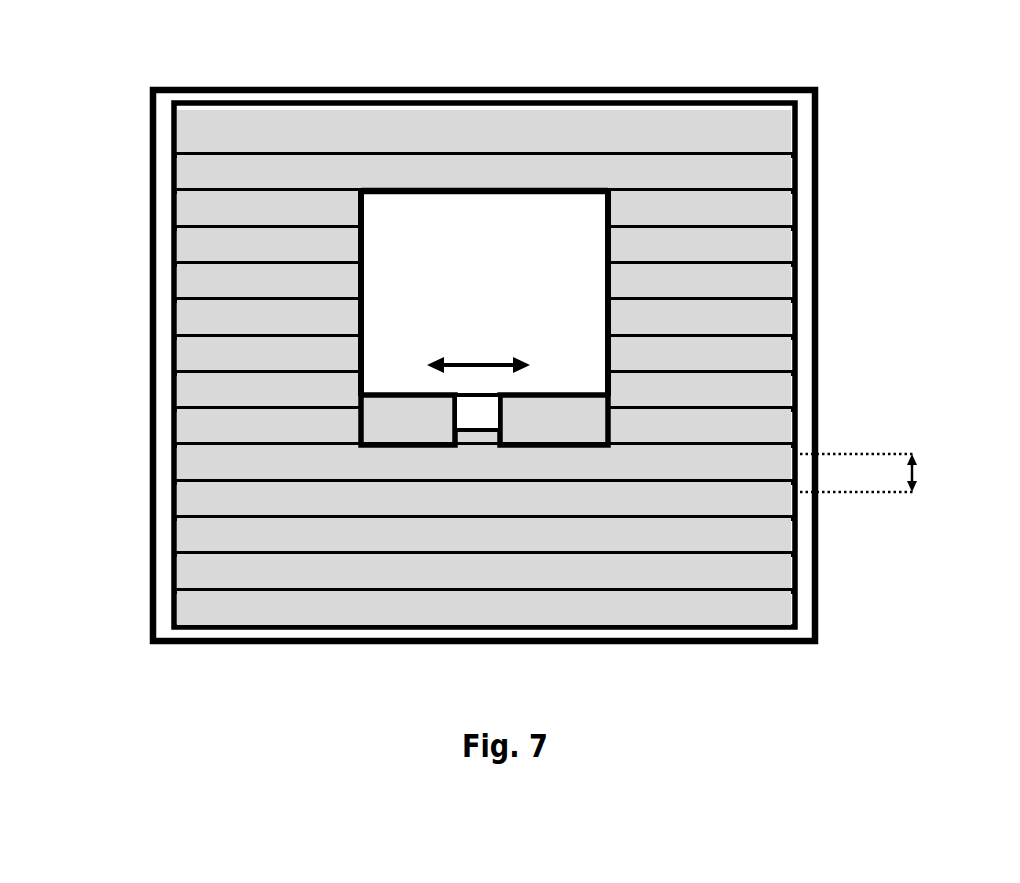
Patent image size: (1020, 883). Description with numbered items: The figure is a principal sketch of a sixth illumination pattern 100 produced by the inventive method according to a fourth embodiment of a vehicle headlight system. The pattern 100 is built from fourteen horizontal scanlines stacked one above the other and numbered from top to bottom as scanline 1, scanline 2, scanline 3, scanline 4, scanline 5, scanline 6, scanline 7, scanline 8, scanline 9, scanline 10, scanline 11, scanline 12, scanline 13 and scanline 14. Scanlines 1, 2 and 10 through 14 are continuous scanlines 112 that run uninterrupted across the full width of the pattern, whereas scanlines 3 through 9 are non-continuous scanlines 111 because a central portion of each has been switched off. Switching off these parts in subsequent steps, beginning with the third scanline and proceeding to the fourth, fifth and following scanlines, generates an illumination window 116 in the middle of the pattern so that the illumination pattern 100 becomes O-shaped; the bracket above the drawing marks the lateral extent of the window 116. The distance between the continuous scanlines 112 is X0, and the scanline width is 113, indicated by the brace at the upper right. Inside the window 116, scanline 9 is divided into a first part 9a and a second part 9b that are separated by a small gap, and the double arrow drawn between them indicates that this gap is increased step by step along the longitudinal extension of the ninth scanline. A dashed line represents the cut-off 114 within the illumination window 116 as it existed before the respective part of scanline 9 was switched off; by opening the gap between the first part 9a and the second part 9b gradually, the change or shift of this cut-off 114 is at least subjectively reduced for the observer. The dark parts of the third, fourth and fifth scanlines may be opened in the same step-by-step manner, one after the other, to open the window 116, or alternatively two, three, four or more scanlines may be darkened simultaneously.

The sixth illumination pattern 100 is at (135, 54).
The continuous scanlines 112 is at (731, 100).
The scanline width 113 is at (828, 100).
The illumination window 116 is at (375, 67).
The non-continuous scanlines 111 is at (607, 247).
The first part 9a is at (390, 393).
The second part 9b is at (543, 393).
The cut-off 114 is at (468, 396).
The distance between the continuous scanlines X0 is at (880, 473).
The scanline 1 is at (452, 132).
The scanline 2 is at (453, 169).
The scanline 3 is at (453, 206).
The scanline 4 is at (453, 242).
The scanline 5 is at (453, 279).
The scanline 6 is at (453, 315).
The scanline 7 is at (453, 351).
The scanline 8 is at (453, 388).
The scanline 9 is at (453, 424).
The scanline 10 is at (453, 461).
The scanline 11 is at (453, 497).
The scanline 12 is at (453, 533).
The scanline 13 is at (453, 569).
The scanline 14 is at (451, 605).